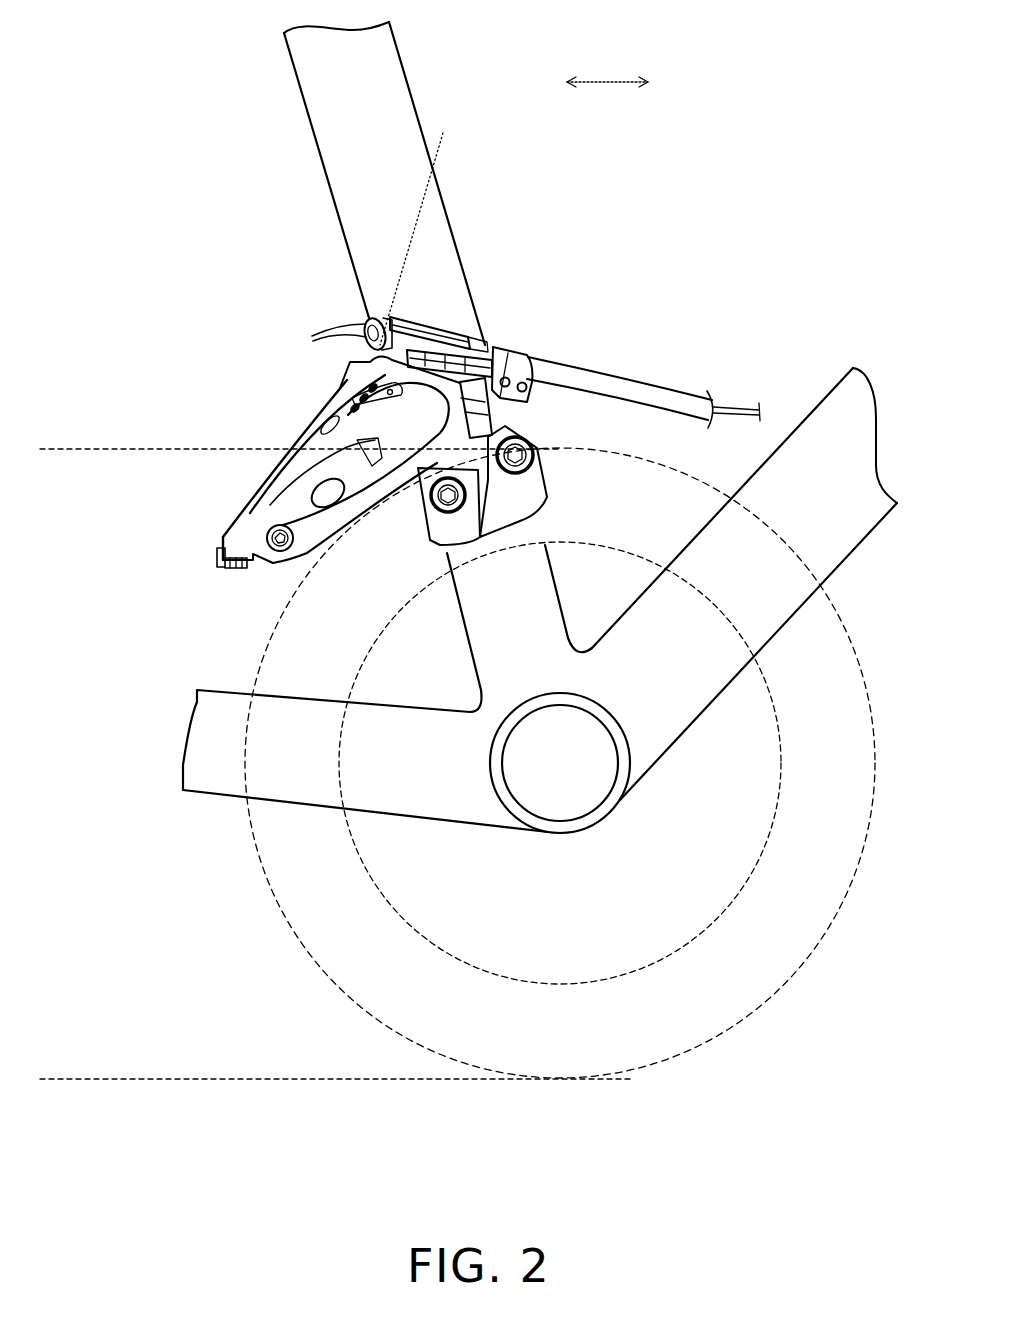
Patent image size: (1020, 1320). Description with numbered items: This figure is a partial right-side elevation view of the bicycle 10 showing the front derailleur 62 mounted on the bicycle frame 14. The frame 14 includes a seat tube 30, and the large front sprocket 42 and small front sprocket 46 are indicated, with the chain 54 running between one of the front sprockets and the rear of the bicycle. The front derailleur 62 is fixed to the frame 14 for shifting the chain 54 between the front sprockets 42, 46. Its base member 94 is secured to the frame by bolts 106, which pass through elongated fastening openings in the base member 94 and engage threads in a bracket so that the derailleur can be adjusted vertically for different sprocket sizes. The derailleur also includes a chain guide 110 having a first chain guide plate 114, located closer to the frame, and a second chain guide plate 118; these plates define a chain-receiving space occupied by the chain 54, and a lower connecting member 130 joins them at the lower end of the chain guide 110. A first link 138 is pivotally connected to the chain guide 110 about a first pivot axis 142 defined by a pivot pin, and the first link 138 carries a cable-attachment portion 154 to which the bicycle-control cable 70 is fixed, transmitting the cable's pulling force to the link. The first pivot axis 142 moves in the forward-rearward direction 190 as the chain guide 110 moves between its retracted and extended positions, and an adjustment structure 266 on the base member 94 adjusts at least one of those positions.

The bicycle 10 is at (457, 370).
The bicycle frame 14 is at (832, 390).
The seat tube 30 is at (310, 122).
The large front sprocket 42 is at (855, 652).
The small front sprocket 46 is at (772, 825).
The chain 54 is at (120, 455).
The front derailleur 62 is at (580, 259).
The bicycle-control cable 70 is at (742, 408).
The base member 94 is at (510, 350).
The bolts 106 is at (540, 470).
The chain guide 110 is at (250, 500).
The first chain guide plate 114 is at (308, 518).
The second chain guide plate 118 is at (300, 442).
The lower connecting member 130 is at (216, 568).
The first link 138 is at (473, 318).
The first pivot axis 142 is at (403, 265).
The cable-attachment portion 154 is at (357, 346).
The forward-rearward direction 190 is at (605, 85).
The adjustment structure 266 is at (538, 408).